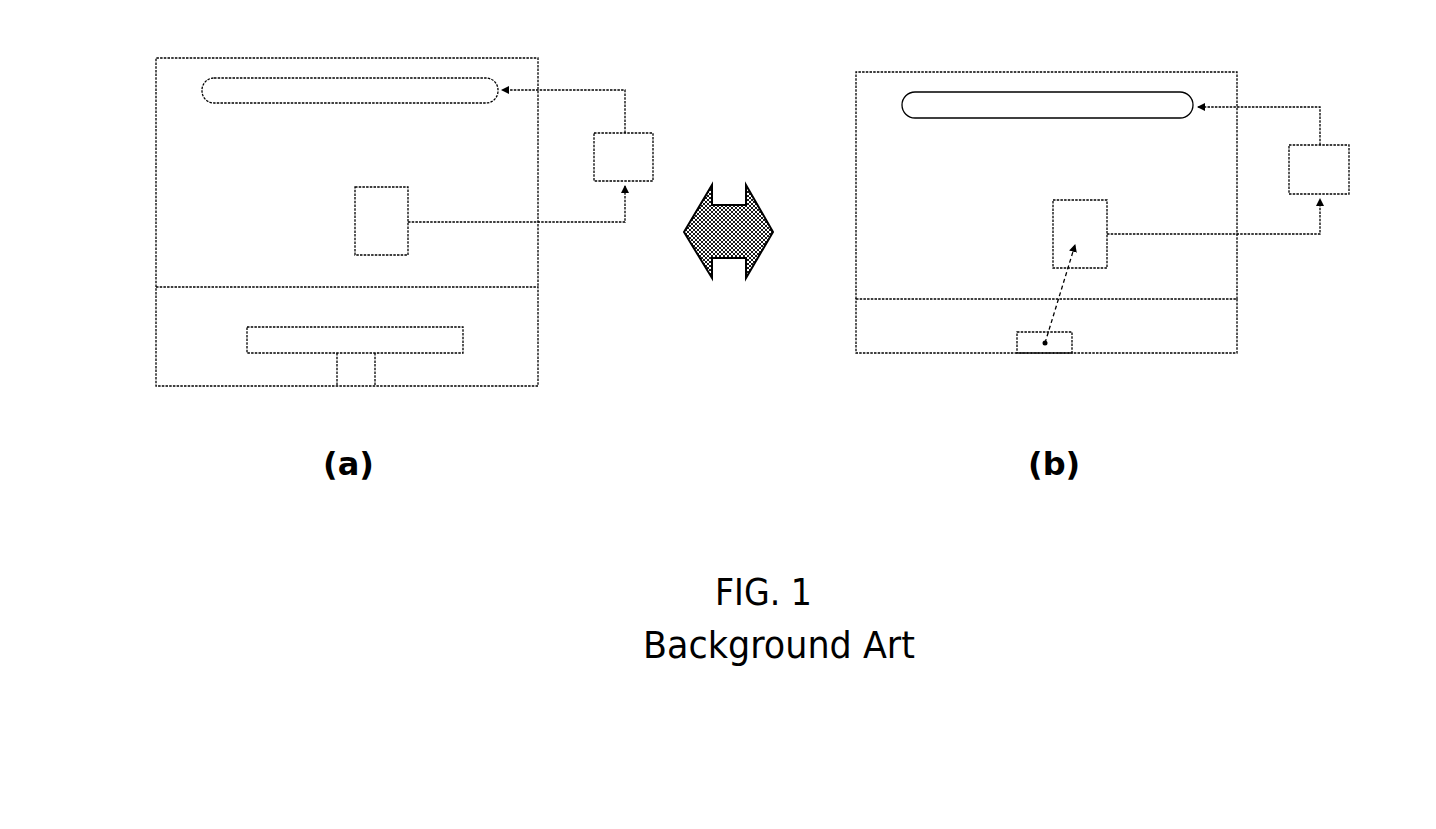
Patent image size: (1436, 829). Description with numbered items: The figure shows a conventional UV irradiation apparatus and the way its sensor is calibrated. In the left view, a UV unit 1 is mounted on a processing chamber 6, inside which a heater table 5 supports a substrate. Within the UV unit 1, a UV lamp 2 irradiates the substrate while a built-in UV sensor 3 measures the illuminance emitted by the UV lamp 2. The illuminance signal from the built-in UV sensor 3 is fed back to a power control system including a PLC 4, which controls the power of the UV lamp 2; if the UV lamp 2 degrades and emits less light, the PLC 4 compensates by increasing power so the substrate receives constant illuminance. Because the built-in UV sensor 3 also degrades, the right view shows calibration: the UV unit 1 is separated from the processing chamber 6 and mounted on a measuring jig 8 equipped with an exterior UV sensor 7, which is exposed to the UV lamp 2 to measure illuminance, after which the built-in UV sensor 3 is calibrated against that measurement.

The UV unit 1 is at (340, 58).
The UV lamp 2 is at (230, 104).
The built-in UV sensor 3 is at (353, 219).
The PLC 4 is at (655, 148).
The heater table 5 is at (465, 345).
The processing chamber 6 is at (540, 350).
The exterior UV sensor 7 is at (1072, 345).
The measuring jig 8 is at (1237, 326).